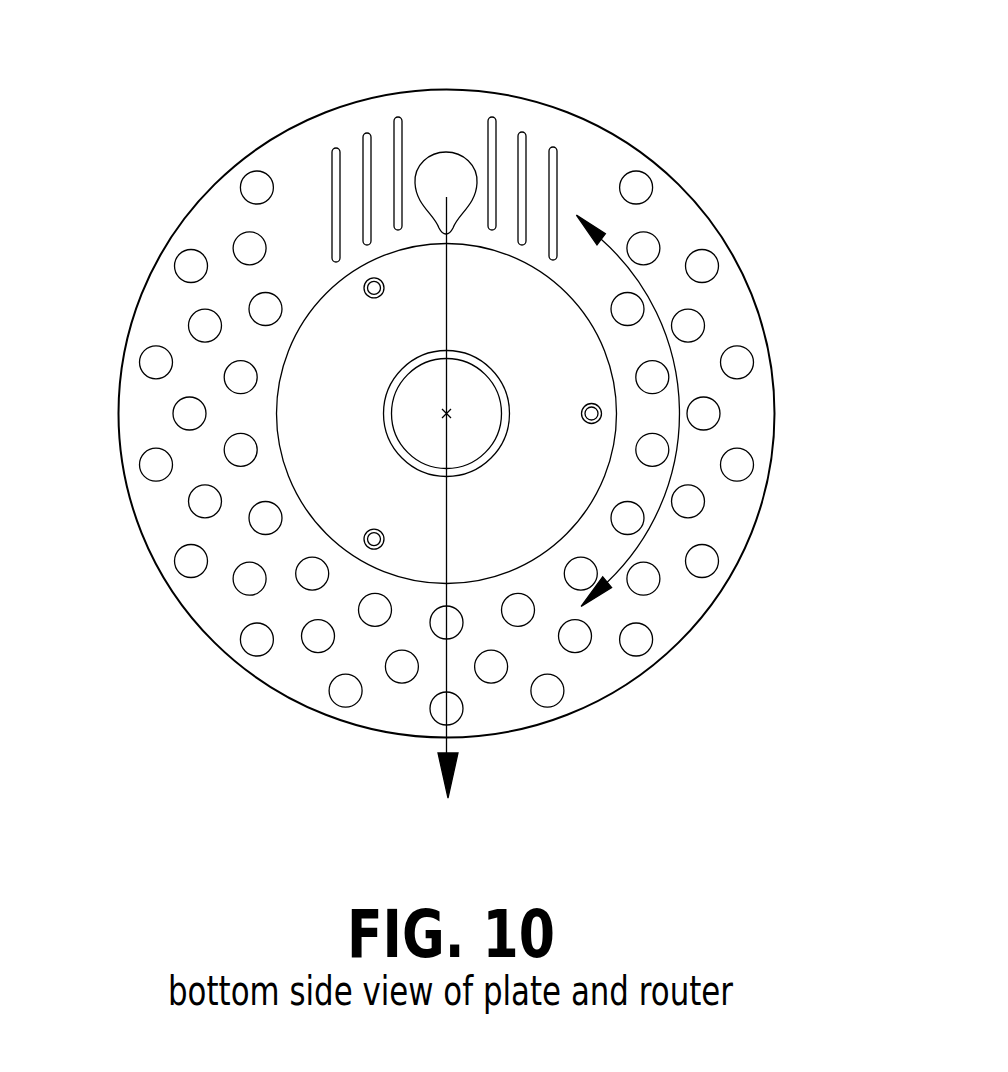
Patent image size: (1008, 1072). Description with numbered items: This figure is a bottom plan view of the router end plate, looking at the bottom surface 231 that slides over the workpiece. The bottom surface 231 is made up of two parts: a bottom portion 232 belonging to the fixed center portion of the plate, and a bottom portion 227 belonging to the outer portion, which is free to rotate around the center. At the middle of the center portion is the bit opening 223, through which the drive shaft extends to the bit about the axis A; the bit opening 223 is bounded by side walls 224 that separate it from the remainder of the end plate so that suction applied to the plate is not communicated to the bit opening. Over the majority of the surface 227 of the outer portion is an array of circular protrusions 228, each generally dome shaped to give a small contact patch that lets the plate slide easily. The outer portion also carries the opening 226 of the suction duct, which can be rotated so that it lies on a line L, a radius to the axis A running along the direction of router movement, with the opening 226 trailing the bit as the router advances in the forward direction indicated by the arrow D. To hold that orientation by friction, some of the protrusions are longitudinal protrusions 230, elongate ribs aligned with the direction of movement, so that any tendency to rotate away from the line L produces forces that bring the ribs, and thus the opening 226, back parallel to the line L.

The bit opening 223 is at (497, 381).
The side walls 224 is at (463, 397).
The opening 226 is at (445, 160).
The bottom portion of the outer portion 227 is at (212, 228).
The circular protrusions 228 is at (188, 563).
The longitudinal protrusions 230 is at (558, 178).
The bottom surface 231 is at (766, 410).
The bottom portion of the center portion 232 is at (572, 470).
The axis A is at (446, 414).
The line L is at (446, 521).
The arrow D is at (450, 782).